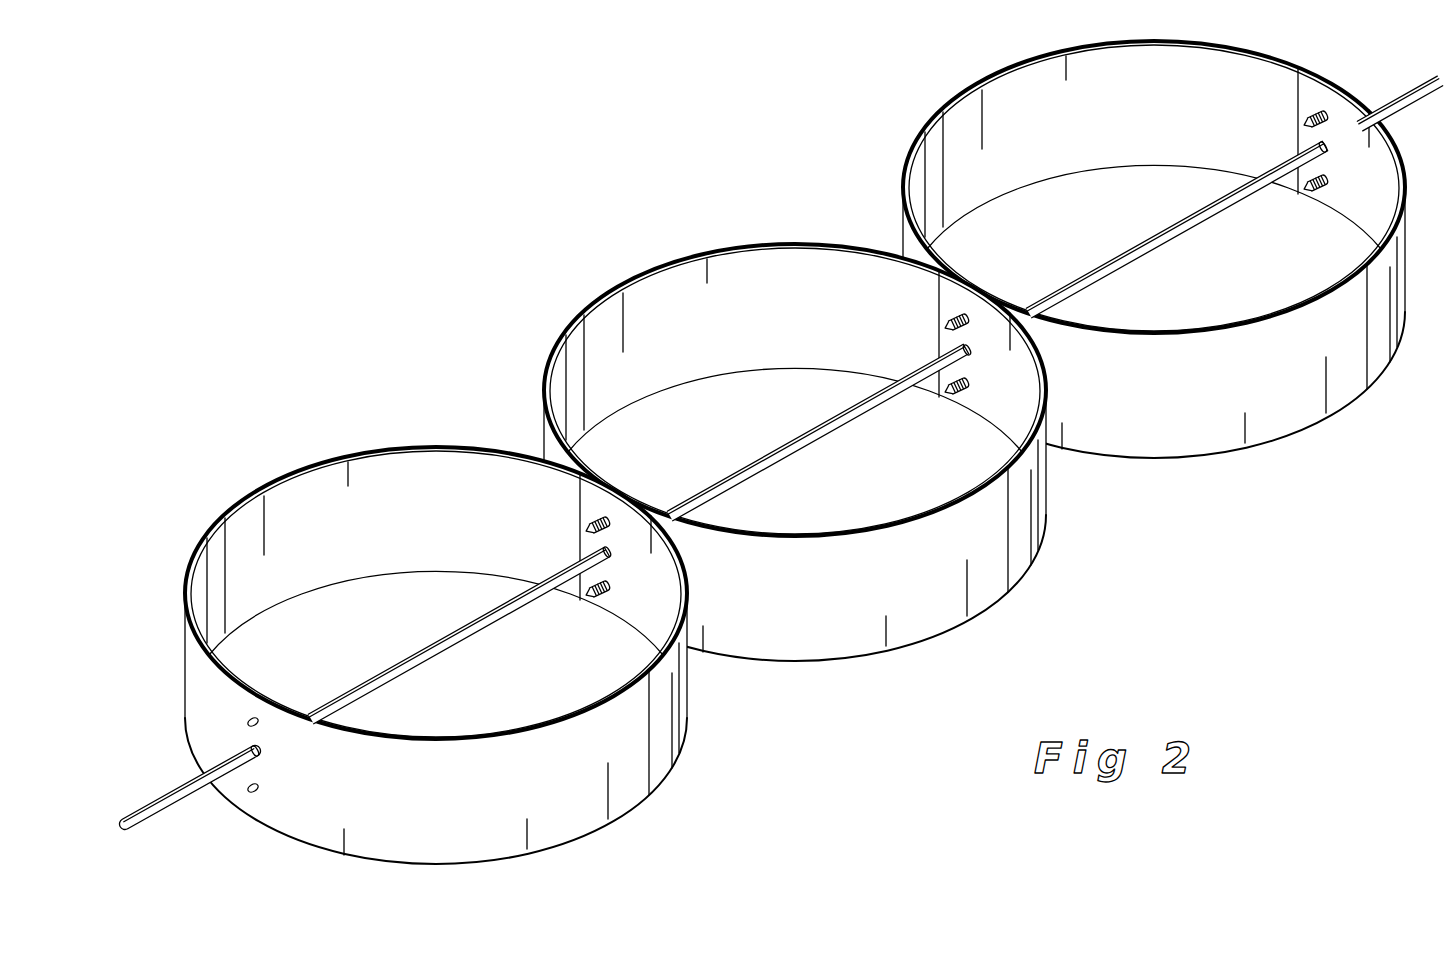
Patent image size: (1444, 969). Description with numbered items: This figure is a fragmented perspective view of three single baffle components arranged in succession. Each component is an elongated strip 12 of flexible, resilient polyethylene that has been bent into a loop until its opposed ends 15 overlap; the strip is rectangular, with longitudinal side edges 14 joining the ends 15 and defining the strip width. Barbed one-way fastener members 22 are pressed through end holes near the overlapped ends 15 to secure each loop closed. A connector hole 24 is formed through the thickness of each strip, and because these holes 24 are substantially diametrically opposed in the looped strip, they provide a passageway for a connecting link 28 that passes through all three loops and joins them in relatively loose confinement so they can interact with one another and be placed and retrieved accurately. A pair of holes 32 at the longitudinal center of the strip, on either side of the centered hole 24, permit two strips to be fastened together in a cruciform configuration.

The elongated strip 12 is at (780, 473).
The longitudinal side edges 14 is at (507, 726).
The opposed ends 15 is at (590, 507).
The fastener members 22 is at (586, 595).
The extra hole 24 is at (611, 552).
The connecting link 28 is at (428, 652).
The pair of holes 32 is at (247, 726).